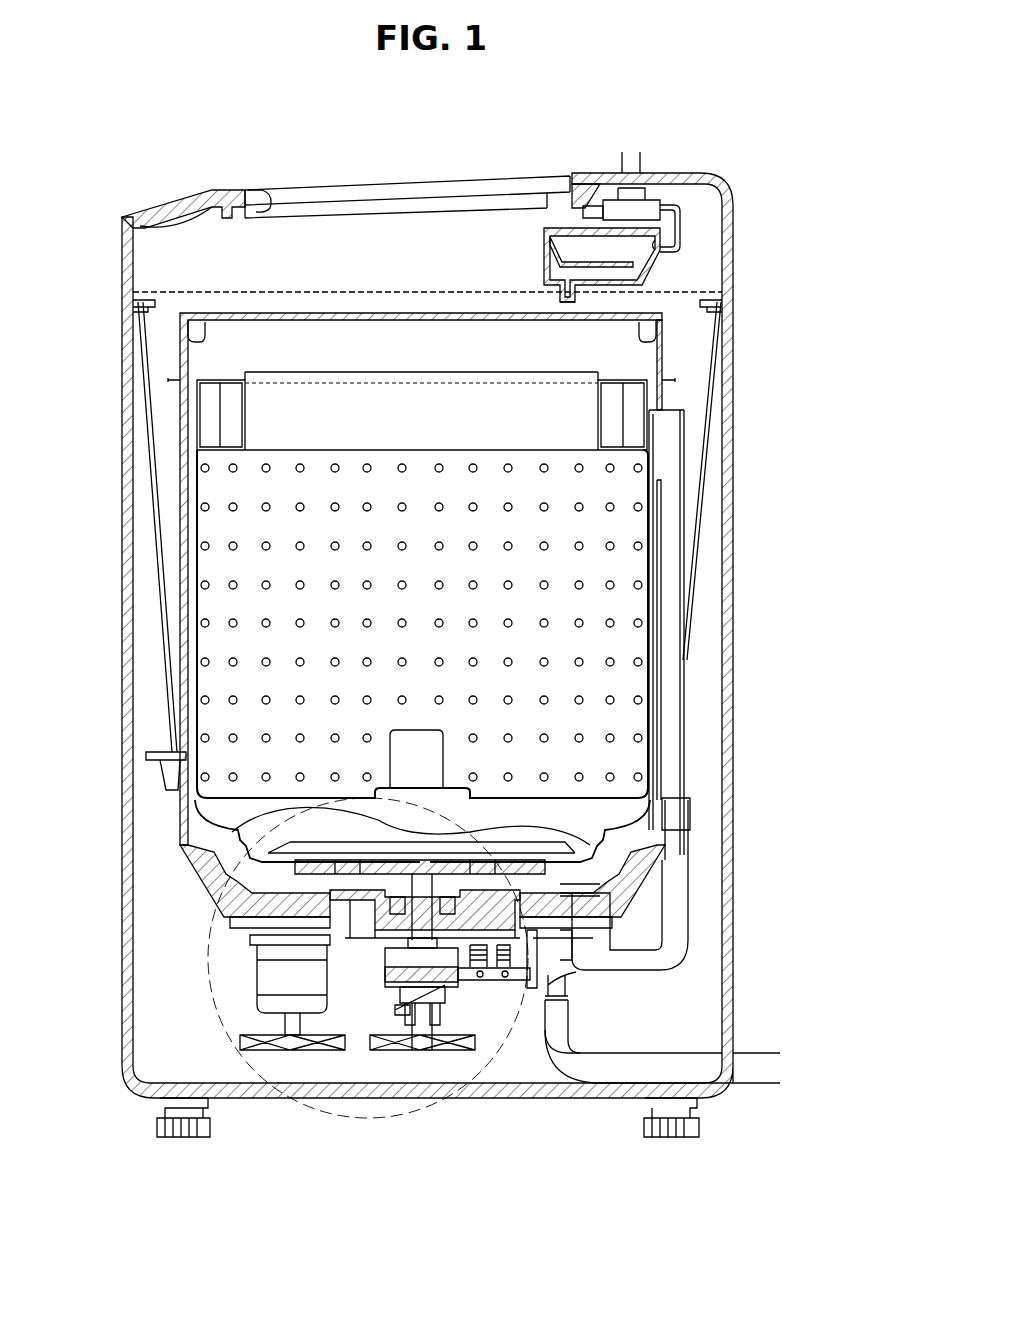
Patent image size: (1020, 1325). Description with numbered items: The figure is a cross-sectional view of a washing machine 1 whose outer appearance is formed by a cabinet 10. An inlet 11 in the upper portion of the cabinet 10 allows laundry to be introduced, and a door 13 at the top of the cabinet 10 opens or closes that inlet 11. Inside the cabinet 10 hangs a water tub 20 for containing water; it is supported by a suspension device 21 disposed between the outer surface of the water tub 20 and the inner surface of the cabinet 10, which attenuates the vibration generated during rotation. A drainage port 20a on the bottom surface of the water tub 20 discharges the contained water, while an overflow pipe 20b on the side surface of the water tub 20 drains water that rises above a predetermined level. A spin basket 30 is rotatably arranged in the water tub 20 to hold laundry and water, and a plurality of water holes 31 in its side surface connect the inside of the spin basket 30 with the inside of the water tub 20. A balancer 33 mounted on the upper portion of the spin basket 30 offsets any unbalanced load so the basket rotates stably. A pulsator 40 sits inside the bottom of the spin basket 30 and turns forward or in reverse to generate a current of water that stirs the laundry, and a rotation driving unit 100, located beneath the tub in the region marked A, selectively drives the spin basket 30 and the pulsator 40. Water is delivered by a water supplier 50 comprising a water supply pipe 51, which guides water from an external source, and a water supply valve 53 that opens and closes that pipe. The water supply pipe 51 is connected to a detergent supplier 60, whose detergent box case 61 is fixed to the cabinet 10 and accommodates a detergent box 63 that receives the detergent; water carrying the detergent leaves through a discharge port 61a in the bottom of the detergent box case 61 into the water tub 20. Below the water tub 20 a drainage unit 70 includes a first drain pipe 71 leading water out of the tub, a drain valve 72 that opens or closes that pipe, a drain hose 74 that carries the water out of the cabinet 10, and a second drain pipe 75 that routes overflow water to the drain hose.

The washing machine 1 is at (444, 97).
The cabinet 10 is at (132, 378).
The inlet 11 is at (264, 207).
The door 13 is at (361, 192).
The water tub 20 is at (182, 462).
The drainage port 20a is at (590, 912).
The overflow pipe 20b is at (666, 655).
The suspension device 21 is at (166, 656).
The spin basket 30 is at (196, 600).
The water holes 31 is at (203, 546).
The balancer 33 is at (196, 420).
The pulsator 40 is at (240, 834).
The water supplier 50 is at (682, 207).
The water supply pipe 51 is at (688, 222).
The water supply valve 53 is at (647, 205).
The detergent supplier 60 is at (556, 222).
The detergent box case 61 is at (595, 226).
The discharge port 61a is at (560, 308).
The detergent box 63 is at (545, 253).
The drainage unit 70 is at (658, 978).
The first drain pipe 71 is at (618, 934).
The drain valve 72 is at (572, 980).
The drain hose 74 is at (752, 1076).
The second drain pipe 75 is at (682, 858).
The rotation driving unit 100 is at (239, 1028).
The driving region A is at (209, 945).